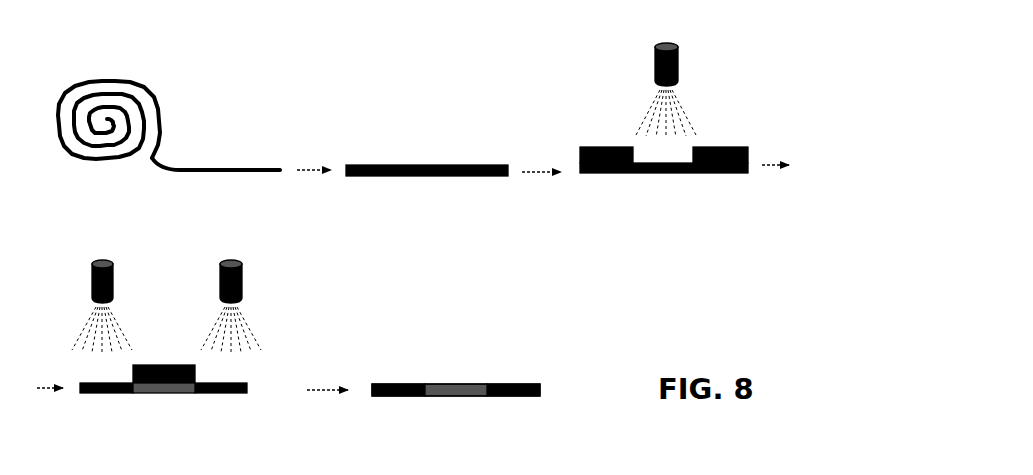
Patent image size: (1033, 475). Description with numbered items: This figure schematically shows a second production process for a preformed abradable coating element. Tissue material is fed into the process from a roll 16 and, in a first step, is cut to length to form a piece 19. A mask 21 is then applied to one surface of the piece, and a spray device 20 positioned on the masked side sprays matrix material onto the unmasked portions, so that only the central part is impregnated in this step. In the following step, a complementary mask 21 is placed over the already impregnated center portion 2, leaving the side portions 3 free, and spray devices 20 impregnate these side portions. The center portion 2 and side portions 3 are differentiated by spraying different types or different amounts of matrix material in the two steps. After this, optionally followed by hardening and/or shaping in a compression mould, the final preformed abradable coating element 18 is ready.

The roll 16 is at (128, 77).
The piece 19 is at (406, 176).
The mask 21 is at (598, 147).
The spray device 20 is at (683, 58).
The side portions 3 is at (100, 395).
The center portion 2 is at (165, 395).
The preformed abradable coating element 18 is at (510, 398).